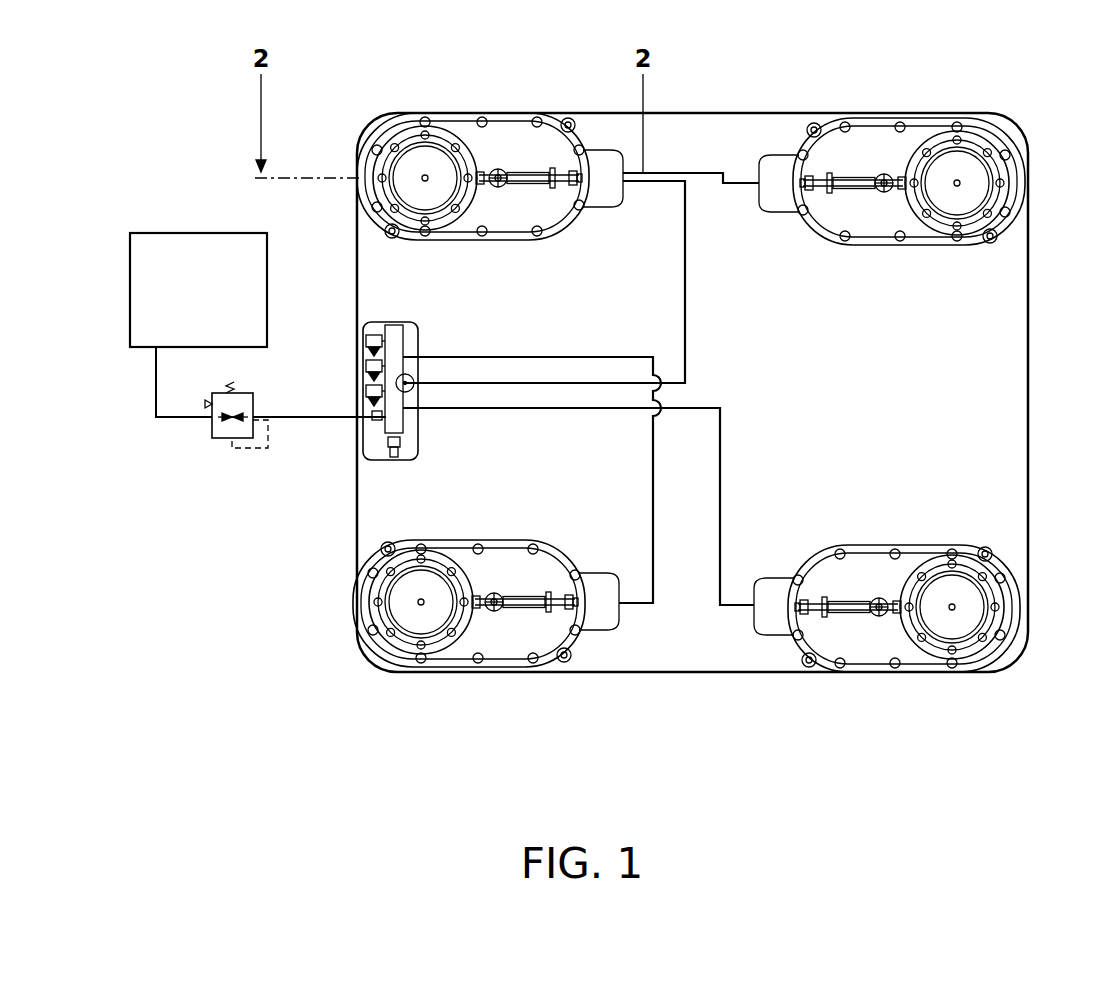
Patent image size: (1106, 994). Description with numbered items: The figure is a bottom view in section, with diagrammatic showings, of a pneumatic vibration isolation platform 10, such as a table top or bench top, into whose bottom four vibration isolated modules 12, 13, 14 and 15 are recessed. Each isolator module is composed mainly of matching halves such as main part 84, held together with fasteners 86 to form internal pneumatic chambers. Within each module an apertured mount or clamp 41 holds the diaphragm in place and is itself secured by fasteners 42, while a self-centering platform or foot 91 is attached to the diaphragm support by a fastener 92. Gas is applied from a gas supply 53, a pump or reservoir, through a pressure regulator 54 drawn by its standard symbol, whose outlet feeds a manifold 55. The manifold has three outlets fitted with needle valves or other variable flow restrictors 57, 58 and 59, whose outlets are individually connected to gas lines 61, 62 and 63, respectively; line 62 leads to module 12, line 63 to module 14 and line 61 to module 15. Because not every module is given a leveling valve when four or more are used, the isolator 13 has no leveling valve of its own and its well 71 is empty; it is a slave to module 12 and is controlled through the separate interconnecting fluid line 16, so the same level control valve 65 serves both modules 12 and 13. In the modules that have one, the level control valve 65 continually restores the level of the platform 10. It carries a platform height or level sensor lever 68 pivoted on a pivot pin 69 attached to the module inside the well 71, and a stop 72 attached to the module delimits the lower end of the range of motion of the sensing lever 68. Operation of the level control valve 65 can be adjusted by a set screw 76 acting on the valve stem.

The pneumatic vibration isolation platform 10 is at (798, 385).
The vibration isolated module 12 is at (464, 135).
The isolator 13 is at (883, 148).
The vibration isolated module 14 is at (438, 600).
The vibration isolated module 15 is at (879, 567).
The interconnecting fluid line 16 is at (724, 170).
The apertured mount or clamp 41 is at (400, 642).
The fasteners 42 is at (352, 612).
The gas supply 53 is at (184, 338).
The pressure regulator 54 is at (215, 438).
The manifold 55 is at (373, 358).
The variable flow restrictor 57 is at (364, 390).
The variable flow restrictor 58 is at (364, 367).
The variable flow restrictor 59 is at (364, 343).
The gas line 61 is at (722, 479).
The gas line 62 is at (686, 300).
The gas line 63 is at (654, 500).
The level control valve 65 is at (540, 172).
The platform height or level sensor lever 68 is at (530, 184).
The pivot pin 69 is at (590, 200).
The well 71 is at (495, 188).
The stop 72 is at (553, 170).
The set screw 76 is at (553, 193).
The main part 84 is at (378, 550).
The fasteners 86 is at (366, 569).
The self-centering platform or foot 91 is at (403, 170).
The fastener 92 is at (425, 176).